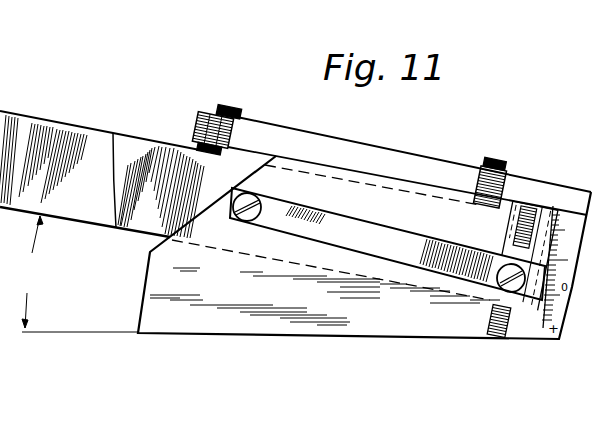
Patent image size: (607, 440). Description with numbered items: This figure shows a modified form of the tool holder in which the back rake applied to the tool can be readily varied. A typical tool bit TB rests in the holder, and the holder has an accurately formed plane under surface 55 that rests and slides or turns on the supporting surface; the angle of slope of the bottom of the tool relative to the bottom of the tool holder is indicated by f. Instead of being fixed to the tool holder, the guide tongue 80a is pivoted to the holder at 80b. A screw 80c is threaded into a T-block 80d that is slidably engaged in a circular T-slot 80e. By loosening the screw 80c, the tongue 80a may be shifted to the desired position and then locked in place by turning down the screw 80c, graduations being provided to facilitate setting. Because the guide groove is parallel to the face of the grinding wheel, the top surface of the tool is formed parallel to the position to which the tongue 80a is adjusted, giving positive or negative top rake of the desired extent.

The tool bit TB is at (102, 174).
The plane under surface 55 is at (252, 339).
The angle of slope of the bottom of the tool f is at (80, 274).
The guide tongue 80a is at (303, 234).
The pivot 80b is at (243, 221).
The screw 80c is at (499, 276).
The T-block 80d is at (518, 251).
The circular T-slot 80e is at (497, 337).